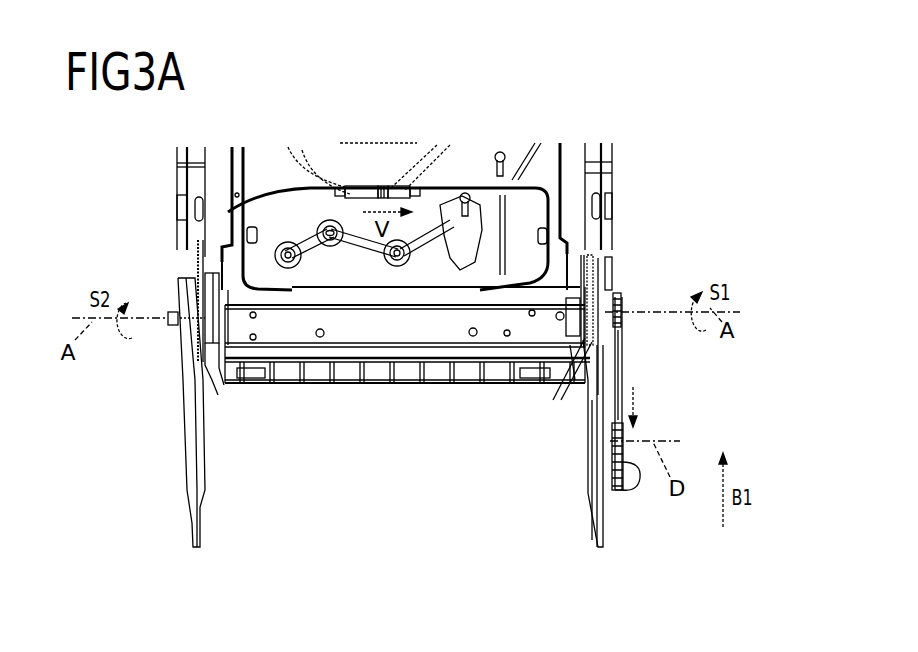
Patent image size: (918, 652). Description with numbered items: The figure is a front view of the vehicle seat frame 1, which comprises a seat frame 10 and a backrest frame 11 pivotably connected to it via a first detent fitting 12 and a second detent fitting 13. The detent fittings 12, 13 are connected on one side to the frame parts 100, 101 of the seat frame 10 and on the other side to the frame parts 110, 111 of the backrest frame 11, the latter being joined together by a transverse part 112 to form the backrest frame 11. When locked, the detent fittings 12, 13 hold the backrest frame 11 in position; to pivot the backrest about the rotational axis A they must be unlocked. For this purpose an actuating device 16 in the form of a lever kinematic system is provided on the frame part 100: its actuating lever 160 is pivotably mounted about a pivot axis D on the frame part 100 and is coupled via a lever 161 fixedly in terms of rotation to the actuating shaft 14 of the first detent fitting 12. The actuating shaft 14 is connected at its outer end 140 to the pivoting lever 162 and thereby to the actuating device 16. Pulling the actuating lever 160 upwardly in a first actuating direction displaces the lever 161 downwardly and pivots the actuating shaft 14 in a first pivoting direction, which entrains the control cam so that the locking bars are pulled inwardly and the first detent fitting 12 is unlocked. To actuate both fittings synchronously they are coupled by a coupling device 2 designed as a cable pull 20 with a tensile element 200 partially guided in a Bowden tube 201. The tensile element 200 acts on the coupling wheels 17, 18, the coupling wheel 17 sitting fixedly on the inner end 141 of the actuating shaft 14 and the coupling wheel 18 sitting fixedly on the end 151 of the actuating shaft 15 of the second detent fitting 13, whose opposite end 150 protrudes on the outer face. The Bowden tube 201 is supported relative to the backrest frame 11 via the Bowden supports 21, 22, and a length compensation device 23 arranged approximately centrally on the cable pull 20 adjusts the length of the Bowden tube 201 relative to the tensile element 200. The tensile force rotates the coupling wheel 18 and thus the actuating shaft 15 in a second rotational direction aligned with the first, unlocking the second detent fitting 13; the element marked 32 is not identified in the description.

The vehicle seat frame 1 is at (469, 108).
The coupling device 2 is at (304, 175).
The seat frame 10 is at (580, 516).
The frame part 100 is at (602, 530).
The frame part 101 is at (203, 532).
The backrest frame 11 is at (562, 115).
The frame part 110 is at (617, 192).
The frame part 111 is at (193, 192).
The transverse part 112 is at (400, 375).
The first detent fitting 12 is at (626, 281).
The second detent fitting 13 is at (173, 266).
The actuating shaft 14 is at (580, 360).
The outer end 140 is at (624, 318).
The end 141 is at (558, 335).
The actuating shaft 15 is at (212, 350).
The end 150 is at (168, 315).
The end 151 is at (240, 340).
The actuating device 16 is at (641, 378).
The actuating lever 160 is at (627, 488).
The lever 161 is at (628, 372).
The pivoting lever 162 is at (622, 305).
The coupling wheel 17 is at (585, 352).
The coupling wheel 18 is at (222, 370).
The cable pull 20 is at (263, 176).
The tensile element 200 is at (608, 272).
The Bowden tube 201 is at (508, 190).
The Bowden support 21 is at (582, 257).
The Bowden support 22 is at (208, 257).
The length compensation device 23 is at (372, 186).
The direction arrow 32 is at (645, 407).